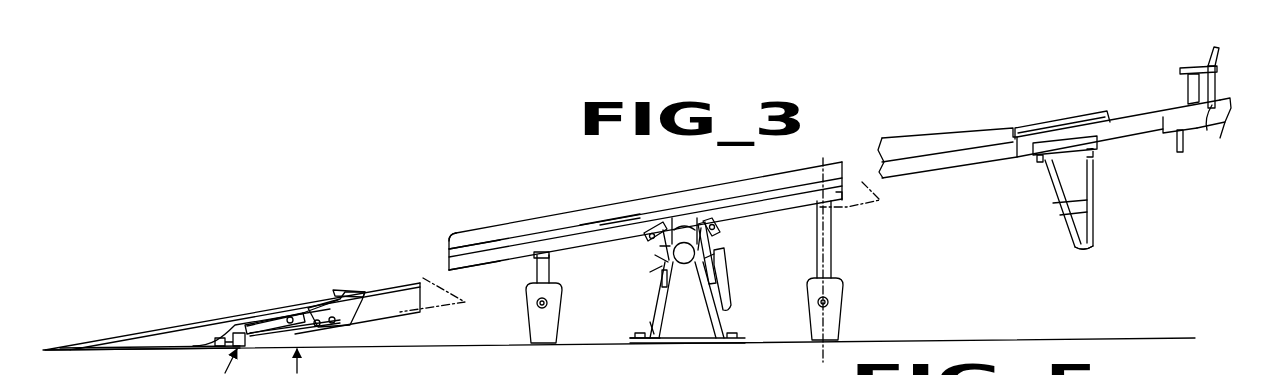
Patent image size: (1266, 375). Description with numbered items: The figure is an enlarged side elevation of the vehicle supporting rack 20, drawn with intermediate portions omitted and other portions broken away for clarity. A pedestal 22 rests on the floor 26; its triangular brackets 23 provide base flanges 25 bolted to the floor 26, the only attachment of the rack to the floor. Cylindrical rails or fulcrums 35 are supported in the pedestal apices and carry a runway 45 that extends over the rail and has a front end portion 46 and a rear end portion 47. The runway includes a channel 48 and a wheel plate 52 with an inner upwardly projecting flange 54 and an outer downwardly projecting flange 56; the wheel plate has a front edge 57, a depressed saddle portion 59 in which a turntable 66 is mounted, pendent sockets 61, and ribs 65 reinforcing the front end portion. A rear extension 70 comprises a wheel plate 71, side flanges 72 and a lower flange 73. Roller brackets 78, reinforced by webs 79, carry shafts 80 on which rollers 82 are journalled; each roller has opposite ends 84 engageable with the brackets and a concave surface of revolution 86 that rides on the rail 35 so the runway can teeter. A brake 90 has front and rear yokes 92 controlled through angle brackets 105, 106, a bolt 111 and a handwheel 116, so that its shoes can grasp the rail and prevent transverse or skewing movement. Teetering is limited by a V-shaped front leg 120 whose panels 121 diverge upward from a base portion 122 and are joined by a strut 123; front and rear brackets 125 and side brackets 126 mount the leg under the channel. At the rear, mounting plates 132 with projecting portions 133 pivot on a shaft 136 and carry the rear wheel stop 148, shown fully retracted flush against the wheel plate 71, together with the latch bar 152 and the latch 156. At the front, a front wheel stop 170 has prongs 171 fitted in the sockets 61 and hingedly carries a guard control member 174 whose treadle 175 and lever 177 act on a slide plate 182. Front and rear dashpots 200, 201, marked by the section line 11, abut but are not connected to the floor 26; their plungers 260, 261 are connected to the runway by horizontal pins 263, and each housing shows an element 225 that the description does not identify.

The section line 11- 11 is at (866, 359).
The vehicle supporting rack 20 is at (719, 163).
The pedestals 22 is at (633, 330).
The triangular brackets 23 is at (717, 328).
The base flanges 25 is at (720, 342).
The floor 26 is at (1065, 339).
The cylindrical rails 35 is at (665, 261).
The runways 45 is at (558, 213).
The front end portion 46 is at (1147, 112).
The rear end portion 47 is at (110, 337).
The channel 48 is at (465, 269).
The wheel plate 52 is at (602, 218).
The inner upwardly projecting flange 54 is at (465, 230).
The outer downwardly projecting flange 56 is at (465, 250).
The front edge 57 is at (1228, 121).
The depressed saddle portion 59 is at (1010, 160).
The pendent sockets 61 is at (1234, 138).
The ribs 65 is at (1193, 128).
The turntables 66 is at (1063, 126).
The rear extension 70 is at (256, 310).
The wheel plate 71 is at (215, 316).
The side flanges 72 is at (407, 308).
The lower flange 73 is at (173, 350).
The roller brackets 78 is at (650, 227).
The webs 79 is at (648, 230).
The shafts 80 is at (668, 247).
The rollers 82 is at (690, 222).
The opposite ends 84 is at (673, 227).
The concave surface of revolution 86 is at (685, 266).
The brake 90 is at (652, 278).
The yokes 92 is at (653, 254).
The front angle bracket 105 is at (705, 261).
The rear angle bracket 106 is at (663, 288).
The bolt 111 is at (648, 328).
The handwheel 116 is at (726, 296).
The V-shaped front legs 120 is at (1094, 209).
The front and rear panels 121 is at (1030, 234).
The base portion 122 is at (1088, 250).
The strut 123 is at (1083, 194).
The front and rear brackets 125 is at (1094, 158).
The side brackets 126 is at (1037, 158).
The mounting plates 132 is at (333, 302).
The projecting portion 133 is at (343, 308).
The shaft 136 is at (317, 330).
The rear wheel stop 148 is at (357, 291).
The latch bar 152 is at (252, 343).
The latch 156 is at (273, 323).
The front wheel stop 170 is at (1213, 48).
The prongs 171 is at (1212, 75).
The guard control member 174 is at (1193, 62).
The treadle 175 is at (1187, 69).
The lever 177 is at (1188, 84).
The slide plate 182 is at (1180, 153).
The front dashpot 200 is at (846, 296).
The rear dashpot 201 is at (530, 333).
The pivot pin 225 is at (534, 306).
The front plunger 260 is at (832, 243).
The rear plunger 261 is at (537, 272).
The horizontal pins 263 is at (540, 254).